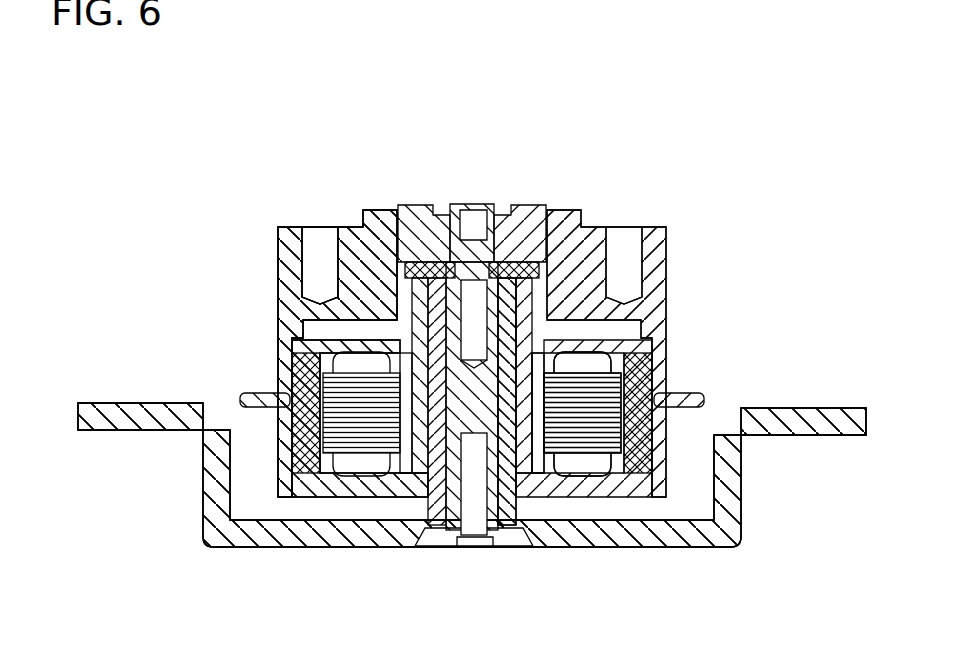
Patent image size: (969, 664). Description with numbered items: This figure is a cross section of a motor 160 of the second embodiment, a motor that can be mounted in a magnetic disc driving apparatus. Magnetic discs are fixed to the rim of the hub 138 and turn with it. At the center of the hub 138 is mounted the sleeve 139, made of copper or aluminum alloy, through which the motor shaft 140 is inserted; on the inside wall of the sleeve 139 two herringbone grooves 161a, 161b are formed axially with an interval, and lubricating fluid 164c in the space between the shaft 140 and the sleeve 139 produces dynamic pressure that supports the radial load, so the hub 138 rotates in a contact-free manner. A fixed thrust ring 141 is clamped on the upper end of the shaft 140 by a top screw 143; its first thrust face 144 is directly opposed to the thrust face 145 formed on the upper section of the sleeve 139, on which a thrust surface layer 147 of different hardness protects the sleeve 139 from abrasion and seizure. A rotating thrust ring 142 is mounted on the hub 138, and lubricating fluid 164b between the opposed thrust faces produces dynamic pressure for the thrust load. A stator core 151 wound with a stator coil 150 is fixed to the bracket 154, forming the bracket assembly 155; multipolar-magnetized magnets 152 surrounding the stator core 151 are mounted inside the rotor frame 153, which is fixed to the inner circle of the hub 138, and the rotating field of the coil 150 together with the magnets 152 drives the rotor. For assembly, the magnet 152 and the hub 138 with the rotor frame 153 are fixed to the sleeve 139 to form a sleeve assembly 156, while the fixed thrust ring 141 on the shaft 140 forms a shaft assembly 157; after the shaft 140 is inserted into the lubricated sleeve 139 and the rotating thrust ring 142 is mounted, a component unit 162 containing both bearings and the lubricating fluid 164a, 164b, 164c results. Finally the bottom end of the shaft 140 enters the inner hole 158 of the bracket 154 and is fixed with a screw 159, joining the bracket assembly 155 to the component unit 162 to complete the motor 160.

The hub 138 is at (664, 228).
The sleeve 139 is at (525, 292).
The motor shaft 140 is at (640, 270).
The fixed thrust ring 141 is at (380, 222).
The rotating thrust ring 142 is at (398, 212).
The top screw 143 is at (461, 207).
The first thrust face 144 is at (527, 252).
The thrust face 145 is at (247, 392).
The thrust surface layer 147 is at (405, 305).
The stator coil 150 is at (590, 357).
The stator core 151 is at (590, 440).
The magnet 152 is at (645, 362).
The rotor frame 153 is at (650, 420).
The bracket 154 is at (737, 490).
The bracket assembly 155 is at (292, 560).
The sleeve assembly 156 is at (270, 255).
The shaft assembly 157 is at (490, 203).
The inner hole 158 is at (445, 522).
The screw 159 is at (497, 535).
The motor 160 is at (793, 356).
The herringbone groove 161a is at (236, 545).
The herringbone groove 161b is at (400, 497).
The component unit 162 is at (262, 333).
The lubricating fluid 164a is at (445, 262).
The lubricating fluid 164b is at (352, 226).
The lubricating fluid 164c is at (530, 480).